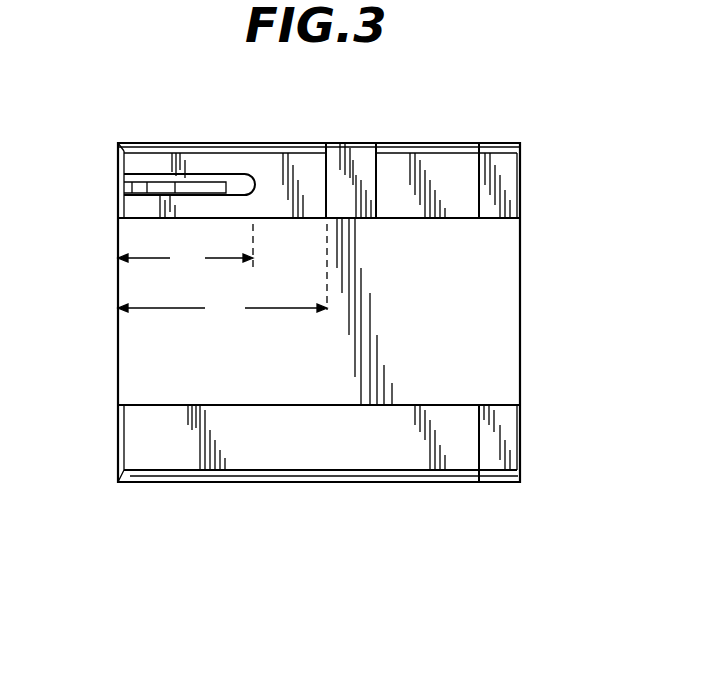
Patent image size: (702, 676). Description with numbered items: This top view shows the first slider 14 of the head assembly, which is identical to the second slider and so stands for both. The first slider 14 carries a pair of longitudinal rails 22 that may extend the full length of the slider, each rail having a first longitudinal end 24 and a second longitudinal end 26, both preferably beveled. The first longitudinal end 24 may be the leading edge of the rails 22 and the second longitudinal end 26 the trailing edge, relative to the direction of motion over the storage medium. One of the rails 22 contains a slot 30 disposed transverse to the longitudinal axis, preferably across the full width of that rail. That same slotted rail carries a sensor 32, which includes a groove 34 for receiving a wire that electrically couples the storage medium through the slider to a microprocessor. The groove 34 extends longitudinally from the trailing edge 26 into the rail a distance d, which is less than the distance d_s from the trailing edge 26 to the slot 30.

The first slider 14 is at (567, 122).
The longitudinal rails 22 is at (260, 160).
The first longitudinal end 24 is at (508, 197).
The second longitudinal end 26 is at (120, 162).
The slot 30 is at (365, 153).
The sensor 32 is at (125, 188).
The groove 34 is at (240, 178).